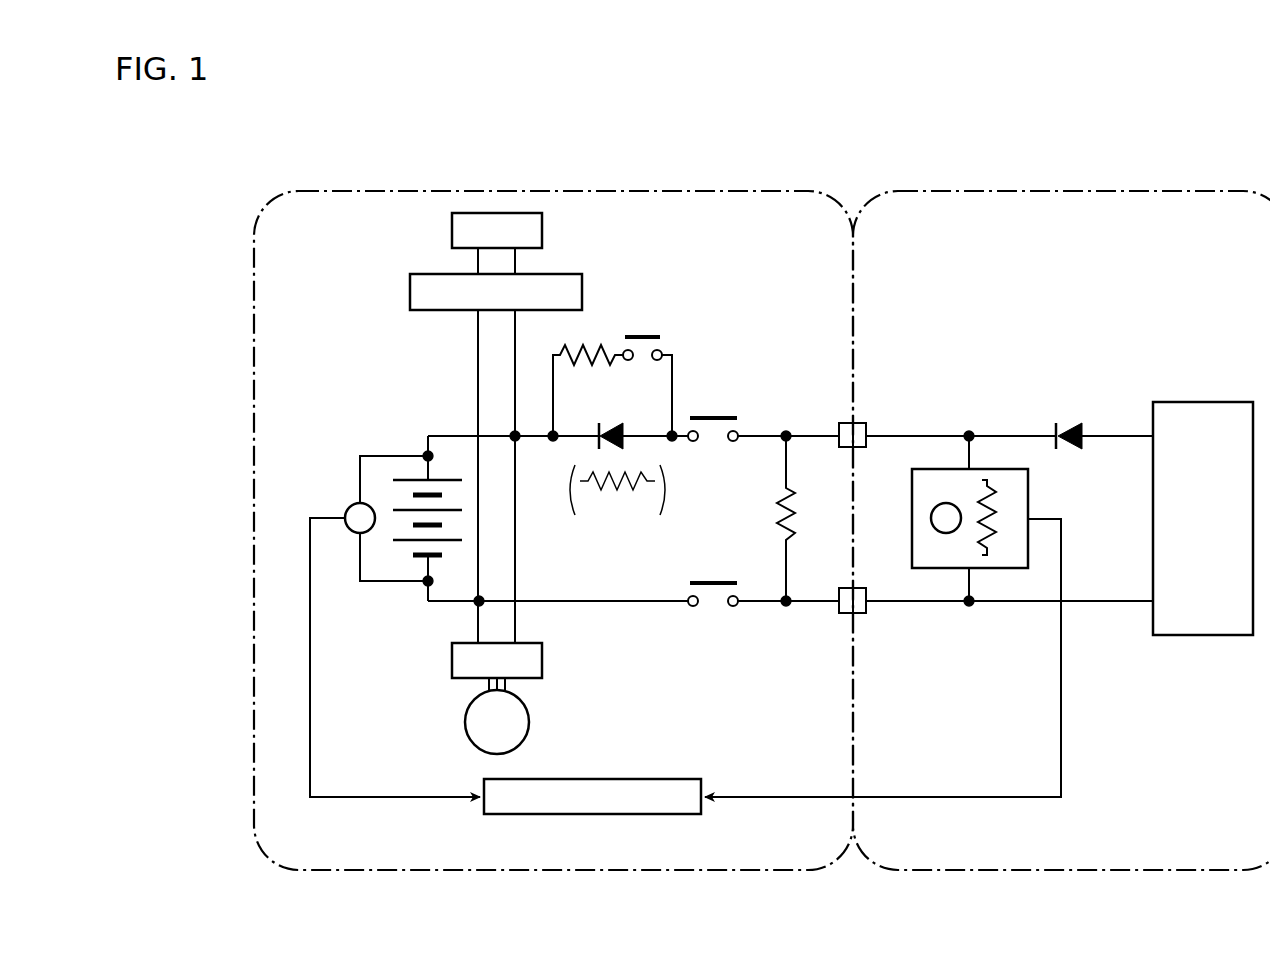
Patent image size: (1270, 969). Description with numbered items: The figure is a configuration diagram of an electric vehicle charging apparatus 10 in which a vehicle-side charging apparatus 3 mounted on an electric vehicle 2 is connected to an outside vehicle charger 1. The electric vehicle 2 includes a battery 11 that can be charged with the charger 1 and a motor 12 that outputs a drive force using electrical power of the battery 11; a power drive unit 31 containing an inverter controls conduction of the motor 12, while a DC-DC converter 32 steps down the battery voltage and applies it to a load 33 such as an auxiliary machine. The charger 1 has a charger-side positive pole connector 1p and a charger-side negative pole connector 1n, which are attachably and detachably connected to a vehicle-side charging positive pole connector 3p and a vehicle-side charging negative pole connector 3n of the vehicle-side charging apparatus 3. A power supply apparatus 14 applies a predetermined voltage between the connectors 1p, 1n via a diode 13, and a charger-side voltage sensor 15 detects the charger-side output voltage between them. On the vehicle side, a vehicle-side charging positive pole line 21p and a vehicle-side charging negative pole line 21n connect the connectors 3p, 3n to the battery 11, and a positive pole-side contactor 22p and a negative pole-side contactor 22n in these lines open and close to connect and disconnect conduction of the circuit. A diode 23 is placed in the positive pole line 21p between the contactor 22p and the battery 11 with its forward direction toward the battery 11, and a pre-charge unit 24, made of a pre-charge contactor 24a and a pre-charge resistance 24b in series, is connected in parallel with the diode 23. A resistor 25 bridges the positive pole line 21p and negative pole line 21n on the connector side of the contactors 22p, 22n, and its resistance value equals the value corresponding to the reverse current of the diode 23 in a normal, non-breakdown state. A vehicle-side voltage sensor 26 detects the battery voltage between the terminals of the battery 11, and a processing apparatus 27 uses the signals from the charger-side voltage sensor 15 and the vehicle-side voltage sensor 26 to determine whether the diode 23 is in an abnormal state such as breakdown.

The outside vehicle charger 1 is at (1173, 190).
The electric vehicle 2 is at (544, 500).
The vehicle-side charging apparatus 3 is at (322, 236).
The electric vehicle charging apparatus 10 is at (1068, 160).
The battery 11 is at (452, 466).
The motor 12 is at (465, 721).
The diode 13 is at (1070, 422).
The power supply apparatus 14 is at (1205, 401).
The charger-side voltage sensor 15 is at (942, 486).
The charger-side positive pole connector 1p is at (861, 426).
The charger-side negative pole connector 1n is at (861, 612).
The vehicle-side charging positive pole connector 3p is at (846, 426).
The vehicle-side charging negative pole connector 3n is at (846, 612).
The vehicle-side charging positive pole line 21p is at (762, 428).
The vehicle-side charging negative pole line 21n is at (646, 608).
The positive pole-side contactor 22p is at (714, 414).
The negative pole-side contactor 22n is at (713, 579).
The diode 23 is at (622, 424).
The pre-charge unit 24 is at (631, 329).
The pre-charge contactor 24a is at (585, 350).
The pre-charge resistance 24b is at (603, 268).
The resistor 25 is at (780, 545).
The vehicle-side voltage sensor 26 is at (350, 505).
The processing apparatus 27 is at (600, 778).
The power drive unit 31 is at (452, 660).
The DC-DC converter 32 is at (410, 292).
The load 33 is at (452, 231).